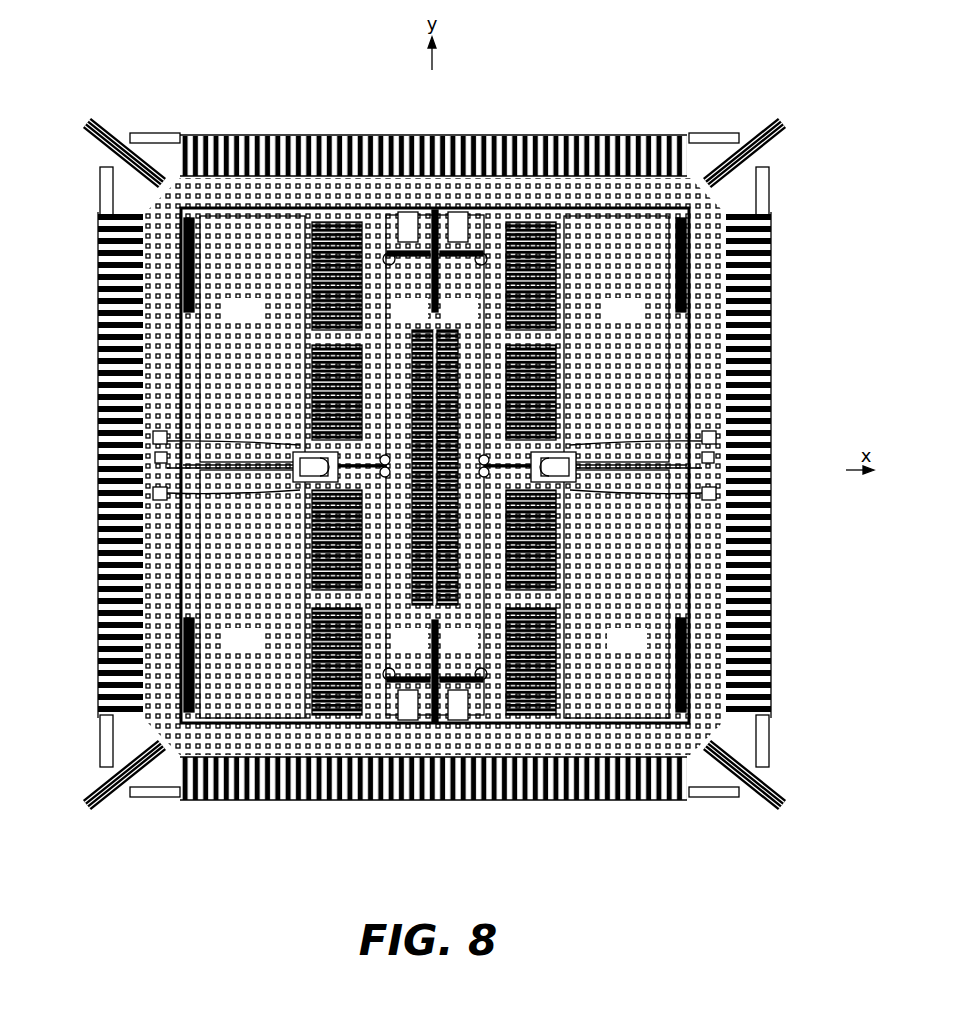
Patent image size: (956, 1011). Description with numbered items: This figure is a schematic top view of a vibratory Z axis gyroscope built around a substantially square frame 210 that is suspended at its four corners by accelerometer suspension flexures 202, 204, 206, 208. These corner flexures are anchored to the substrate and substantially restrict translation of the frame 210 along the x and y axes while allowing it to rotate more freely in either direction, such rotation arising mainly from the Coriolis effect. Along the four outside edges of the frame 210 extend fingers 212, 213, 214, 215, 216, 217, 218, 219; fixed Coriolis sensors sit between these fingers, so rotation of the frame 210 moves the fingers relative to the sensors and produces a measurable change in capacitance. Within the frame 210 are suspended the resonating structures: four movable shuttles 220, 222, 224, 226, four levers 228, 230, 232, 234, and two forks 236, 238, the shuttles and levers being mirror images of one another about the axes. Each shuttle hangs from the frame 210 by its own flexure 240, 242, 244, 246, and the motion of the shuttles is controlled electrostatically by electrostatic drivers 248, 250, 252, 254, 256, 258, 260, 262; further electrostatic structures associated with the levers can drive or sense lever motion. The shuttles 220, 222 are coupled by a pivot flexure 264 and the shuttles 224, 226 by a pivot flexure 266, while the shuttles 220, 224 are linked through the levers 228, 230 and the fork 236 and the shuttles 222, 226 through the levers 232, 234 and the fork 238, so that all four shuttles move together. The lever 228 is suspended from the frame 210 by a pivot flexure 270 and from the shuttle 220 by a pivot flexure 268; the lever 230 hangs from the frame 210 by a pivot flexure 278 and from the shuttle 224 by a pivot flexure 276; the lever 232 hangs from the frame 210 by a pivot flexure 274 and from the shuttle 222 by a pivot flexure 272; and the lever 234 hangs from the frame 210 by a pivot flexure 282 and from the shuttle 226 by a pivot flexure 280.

The accelerometer suspension flexure 202 is at (119, 135).
The accelerometer suspension flexure 204 is at (747, 138).
The accelerometer suspension flexure 206 is at (747, 792).
The accelerometer suspension flexure 208 is at (119, 791).
The frame 210 is at (205, 742).
The finger 212 is at (262, 133).
The finger 213 is at (606, 133).
The finger 214 is at (770, 320).
The finger 215 is at (770, 615).
The finger 216 is at (612, 778).
The finger 217 is at (252, 775).
The finger 218 is at (100, 615).
The finger 219 is at (100, 320).
The movable shuttle 220 is at (222, 320).
The movable shuttle 222 is at (222, 650).
The movable shuttle 224 is at (602, 320).
The movable shuttle 226 is at (607, 650).
The lever 228 is at (393, 320).
The lever 230 is at (443, 320).
The lever 232 is at (393, 650).
The lever 234 is at (443, 650).
The fork 236 is at (437, 210).
The fork 238 is at (436, 722).
The flexure 240 is at (183, 266).
The flexure 242 is at (183, 663).
The flexure 244 is at (687, 267).
The flexure 246 is at (687, 663).
The electrostatic driver 248 is at (330, 222).
The electrostatic driver 250 is at (312, 388).
The electrostatic driver 252 is at (312, 545).
The electrostatic driver 254 is at (332, 715).
The electrostatic driver 256 is at (536, 715).
The electrostatic driver 258 is at (556, 545).
The electrostatic driver 260 is at (556, 388).
The electrostatic driver 262 is at (540, 222).
The pivot flexure 264 is at (155, 468).
The pivot flexure 266 is at (714, 468).
The pivot flexure 268 is at (153, 441).
The pivot flexure 272 is at (153, 493).
The pivot flexure 276 is at (716, 441).
The pivot flexure 280 is at (716, 493).
The pivot flexure 270 is at (389, 252).
The pivot flexure 274 is at (389, 682).
The pivot flexure 278 is at (481, 252).
The pivot flexure 282 is at (481, 682).